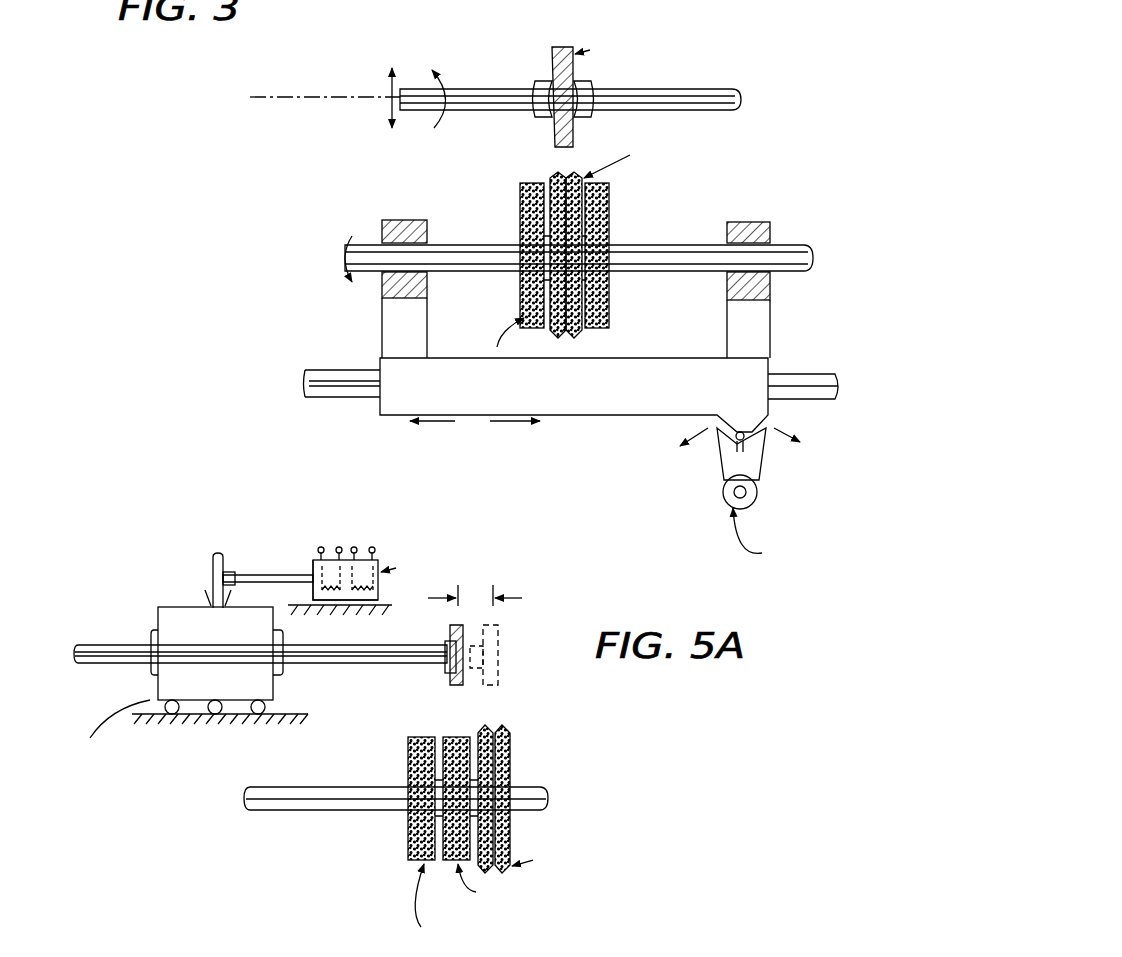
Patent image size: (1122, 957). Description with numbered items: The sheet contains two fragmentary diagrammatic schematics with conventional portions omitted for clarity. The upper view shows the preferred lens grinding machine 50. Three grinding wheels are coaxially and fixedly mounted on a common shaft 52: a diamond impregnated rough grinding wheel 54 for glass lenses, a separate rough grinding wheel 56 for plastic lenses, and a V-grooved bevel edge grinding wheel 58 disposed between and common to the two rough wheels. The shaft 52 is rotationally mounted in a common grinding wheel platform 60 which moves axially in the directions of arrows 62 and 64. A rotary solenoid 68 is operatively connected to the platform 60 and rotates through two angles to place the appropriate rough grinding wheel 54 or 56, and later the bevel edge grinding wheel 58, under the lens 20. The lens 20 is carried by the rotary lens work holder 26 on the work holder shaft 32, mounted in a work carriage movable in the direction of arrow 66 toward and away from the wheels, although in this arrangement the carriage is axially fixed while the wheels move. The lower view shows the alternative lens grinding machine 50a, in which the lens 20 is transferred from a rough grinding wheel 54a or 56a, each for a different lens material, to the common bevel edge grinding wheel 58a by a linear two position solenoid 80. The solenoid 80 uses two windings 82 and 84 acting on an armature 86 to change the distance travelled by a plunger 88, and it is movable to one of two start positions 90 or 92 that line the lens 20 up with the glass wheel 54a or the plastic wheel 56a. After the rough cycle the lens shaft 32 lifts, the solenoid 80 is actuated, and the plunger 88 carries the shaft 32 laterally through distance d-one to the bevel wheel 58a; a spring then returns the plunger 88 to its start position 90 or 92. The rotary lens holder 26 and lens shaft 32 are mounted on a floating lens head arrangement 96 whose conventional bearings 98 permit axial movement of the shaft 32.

In FIG. 3, the lens grinding machine 50 is at (294, 126).
In FIG. 3, the arrow 66 is at (390, 100).
In FIG. 3, the lens 20 is at (563, 47).
In FIG. 5A, the lens 20 is at (451, 632).
In FIG. 3, the lens work holder 26 is at (590, 90).
In FIG. 5A, the lens work holder 26 is at (447, 672).
In FIG. 3, the work holder shaft 32 is at (718, 96).
In FIG. 5A, the work holder shaft 32 is at (363, 666).
In FIG. 3, the common shaft 52 is at (640, 270).
In FIG. 5A, the common shaft 52 is at (340, 810).
In FIG. 3, the rough grinding wheel 54 is at (520, 186).
In FIG. 3, the rough grinding wheel 56 is at (611, 222).
In FIG. 3, the bevel edge grinding wheel 58 is at (560, 178).
In FIG. 3, the grinding wheel platform 60 is at (772, 331).
In FIG. 3, the arrow 62 is at (452, 404).
In FIG. 3, the arrow 64 is at (510, 421).
In FIG. 3, the rotary solenoid 68 is at (757, 492).
In FIG. 5A, the two position solenoid 80 is at (381, 590).
In FIG. 5A, the winding 82 is at (364, 546).
In FIG. 5A, the winding 84 is at (334, 546).
In FIG. 5A, the armature 86 is at (312, 566).
In FIG. 5A, the plunger 88 is at (258, 570).
In FIG. 5A, the axial position 90 is at (348, 634).
In FIG. 5A, the axial position 92 is at (306, 638).
In FIG. 5A, the floating lens head arrangement 96 is at (274, 695).
In FIG. 5A, the bearings 98 is at (176, 706).
In FIG. 5A, the lens grinding machine 50a is at (190, 812).
In FIG. 5A, the rough grinding wheel 54a is at (428, 737).
In FIG. 5A, the rough grinding wheel 56a is at (462, 737).
In FIG. 5A, the bevel edge grinding wheel 58a is at (510, 730).